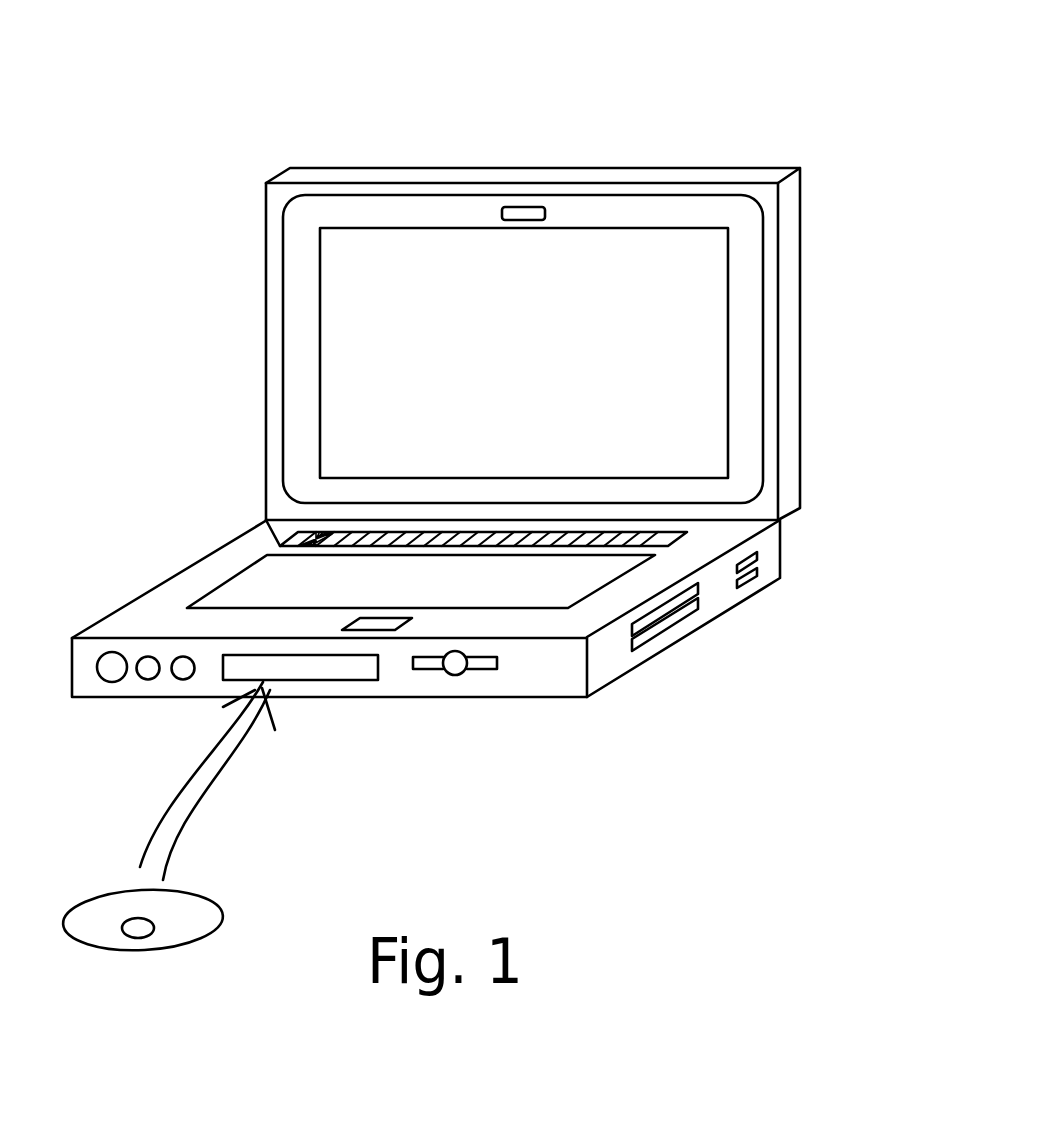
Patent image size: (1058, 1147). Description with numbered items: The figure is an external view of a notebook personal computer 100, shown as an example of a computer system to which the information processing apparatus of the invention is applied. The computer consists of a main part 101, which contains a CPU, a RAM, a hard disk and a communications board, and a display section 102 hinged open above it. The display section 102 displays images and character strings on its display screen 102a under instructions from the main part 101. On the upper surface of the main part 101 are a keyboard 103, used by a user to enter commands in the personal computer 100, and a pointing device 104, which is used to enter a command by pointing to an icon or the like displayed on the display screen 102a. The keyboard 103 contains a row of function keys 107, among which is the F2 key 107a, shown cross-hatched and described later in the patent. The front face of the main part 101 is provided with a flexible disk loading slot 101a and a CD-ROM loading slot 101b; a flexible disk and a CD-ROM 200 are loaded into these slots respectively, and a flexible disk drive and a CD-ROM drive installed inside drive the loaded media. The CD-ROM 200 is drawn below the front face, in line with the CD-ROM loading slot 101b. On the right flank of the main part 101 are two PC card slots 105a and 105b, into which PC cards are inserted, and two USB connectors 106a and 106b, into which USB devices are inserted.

The notebook personal computer 100 is at (825, 118).
The main part 101 is at (163, 583).
The flexible disk loading slot 101a is at (455, 675).
The CD-ROM loading slot 101b is at (300, 683).
The display section 102 is at (270, 183).
The display screen 102a is at (343, 367).
The keyboard 103 is at (262, 546).
The pointing device 104 is at (383, 632).
The PC card slot 105a is at (630, 627).
The PC card slot 105b is at (650, 648).
The USB connector 106a is at (760, 553).
The USB connector 106b is at (750, 583).
The function keys 107 is at (287, 540).
The F2 key 107a is at (327, 545).
The CD-ROM 200 is at (168, 835).